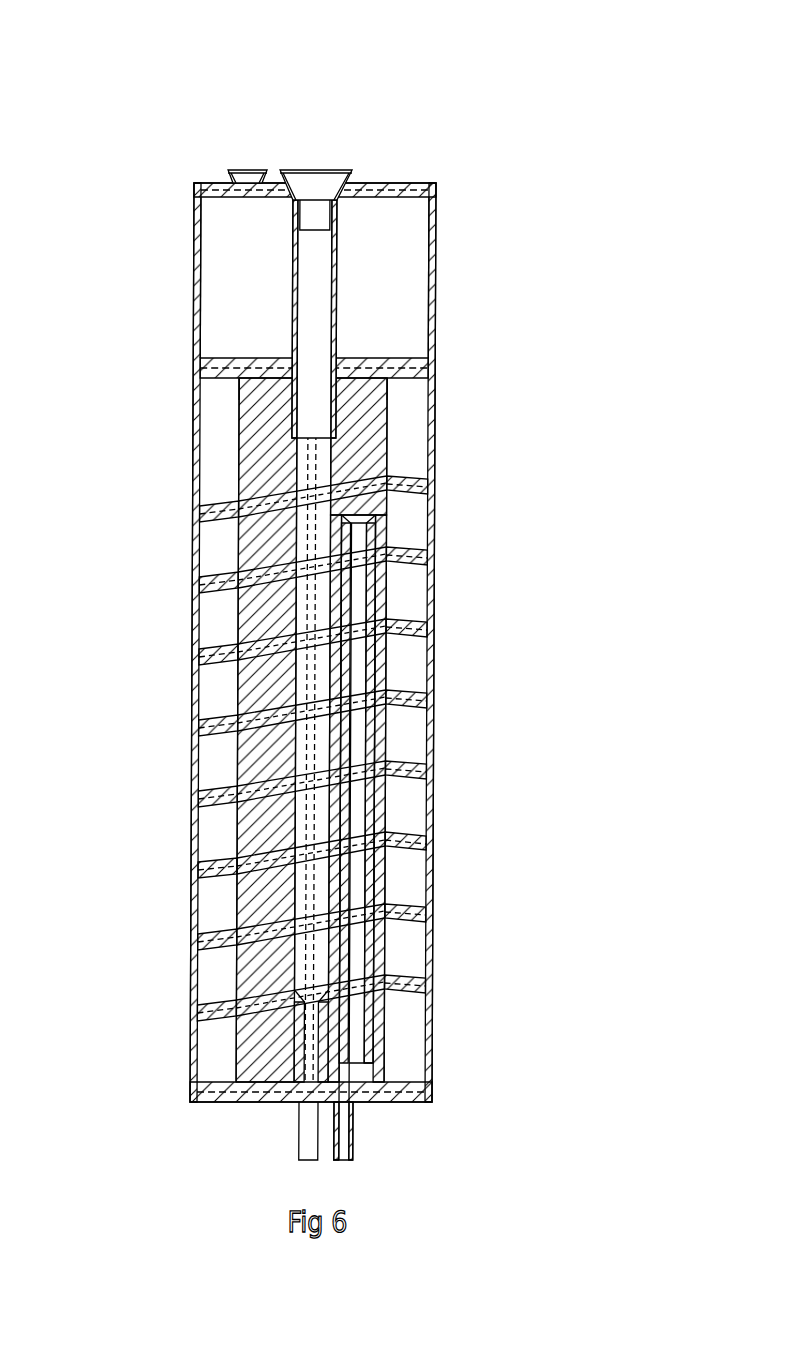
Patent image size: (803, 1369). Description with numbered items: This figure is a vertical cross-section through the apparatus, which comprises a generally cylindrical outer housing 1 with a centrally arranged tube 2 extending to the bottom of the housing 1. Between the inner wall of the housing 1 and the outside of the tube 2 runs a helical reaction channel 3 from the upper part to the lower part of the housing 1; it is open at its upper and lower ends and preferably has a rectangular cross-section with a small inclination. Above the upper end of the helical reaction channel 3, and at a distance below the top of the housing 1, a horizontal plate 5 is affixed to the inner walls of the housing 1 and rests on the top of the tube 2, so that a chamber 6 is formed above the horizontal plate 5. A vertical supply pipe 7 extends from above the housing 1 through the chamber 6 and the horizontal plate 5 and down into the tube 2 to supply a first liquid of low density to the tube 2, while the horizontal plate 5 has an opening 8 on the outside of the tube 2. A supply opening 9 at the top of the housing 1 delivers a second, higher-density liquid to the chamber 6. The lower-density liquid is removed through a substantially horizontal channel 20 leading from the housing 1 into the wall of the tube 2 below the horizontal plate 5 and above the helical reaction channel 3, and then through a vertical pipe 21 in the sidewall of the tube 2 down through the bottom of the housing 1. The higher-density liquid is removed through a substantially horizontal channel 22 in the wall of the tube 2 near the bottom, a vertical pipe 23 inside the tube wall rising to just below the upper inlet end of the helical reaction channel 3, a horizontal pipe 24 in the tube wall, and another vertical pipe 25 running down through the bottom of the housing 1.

The outer housing 1 is at (195, 845).
The tube 2 is at (277, 762).
The helical reaction channel 3 is at (218, 693).
The horizontal plate 5 is at (400, 368).
The chamber 6 is at (243, 277).
The vertical supply pipe 7 is at (340, 277).
The opening 8 is at (245, 392).
The supply opening 9 is at (250, 167).
The horizontal channel 20 is at (313, 402).
The vertical pipe 21 is at (308, 1120).
The horizontal channel 22 is at (368, 1062).
The vertical pipe 23 is at (376, 811).
The horizontal pipe 24 is at (347, 518).
The vertical pipe 25 is at (348, 682).